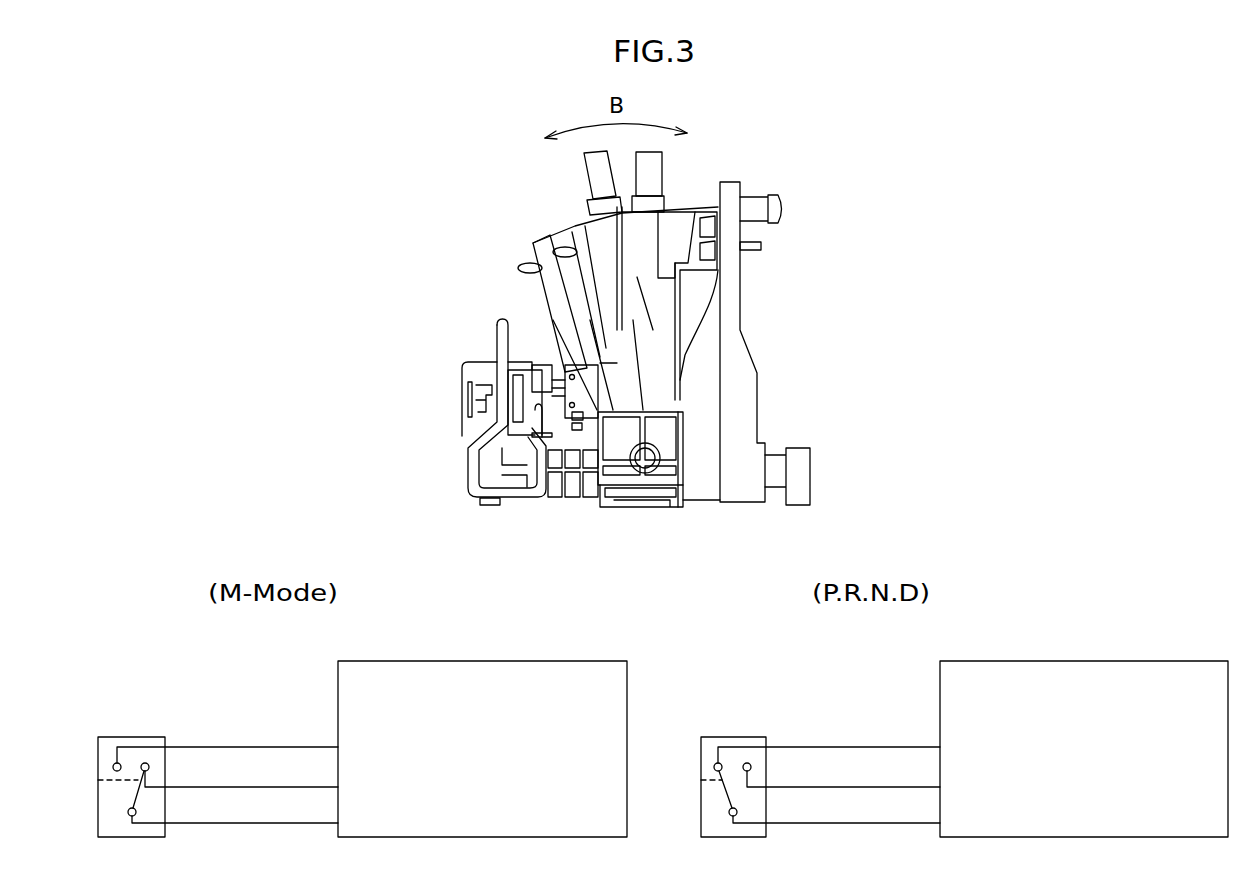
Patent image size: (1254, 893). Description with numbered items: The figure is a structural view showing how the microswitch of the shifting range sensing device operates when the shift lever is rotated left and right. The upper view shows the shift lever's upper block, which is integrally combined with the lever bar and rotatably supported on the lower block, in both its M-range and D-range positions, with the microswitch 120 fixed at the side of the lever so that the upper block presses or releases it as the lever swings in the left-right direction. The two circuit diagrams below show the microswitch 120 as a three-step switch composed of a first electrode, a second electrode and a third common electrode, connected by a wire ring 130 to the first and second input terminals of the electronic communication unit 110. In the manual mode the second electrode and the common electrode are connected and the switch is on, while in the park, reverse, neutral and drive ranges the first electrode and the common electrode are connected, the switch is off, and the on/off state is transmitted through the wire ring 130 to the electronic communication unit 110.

The electronic communication unit 110 is at (462, 428).
The microswitch 120 is at (570, 360).
The wire ring 130 is at (277, 787).